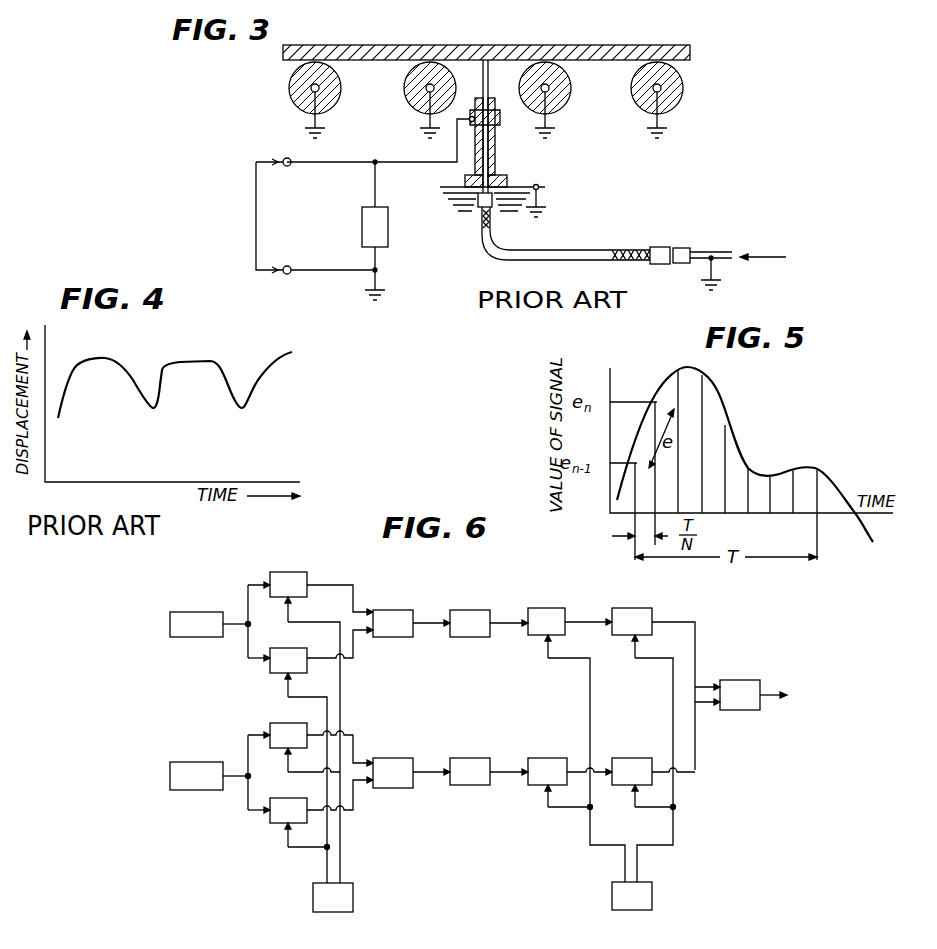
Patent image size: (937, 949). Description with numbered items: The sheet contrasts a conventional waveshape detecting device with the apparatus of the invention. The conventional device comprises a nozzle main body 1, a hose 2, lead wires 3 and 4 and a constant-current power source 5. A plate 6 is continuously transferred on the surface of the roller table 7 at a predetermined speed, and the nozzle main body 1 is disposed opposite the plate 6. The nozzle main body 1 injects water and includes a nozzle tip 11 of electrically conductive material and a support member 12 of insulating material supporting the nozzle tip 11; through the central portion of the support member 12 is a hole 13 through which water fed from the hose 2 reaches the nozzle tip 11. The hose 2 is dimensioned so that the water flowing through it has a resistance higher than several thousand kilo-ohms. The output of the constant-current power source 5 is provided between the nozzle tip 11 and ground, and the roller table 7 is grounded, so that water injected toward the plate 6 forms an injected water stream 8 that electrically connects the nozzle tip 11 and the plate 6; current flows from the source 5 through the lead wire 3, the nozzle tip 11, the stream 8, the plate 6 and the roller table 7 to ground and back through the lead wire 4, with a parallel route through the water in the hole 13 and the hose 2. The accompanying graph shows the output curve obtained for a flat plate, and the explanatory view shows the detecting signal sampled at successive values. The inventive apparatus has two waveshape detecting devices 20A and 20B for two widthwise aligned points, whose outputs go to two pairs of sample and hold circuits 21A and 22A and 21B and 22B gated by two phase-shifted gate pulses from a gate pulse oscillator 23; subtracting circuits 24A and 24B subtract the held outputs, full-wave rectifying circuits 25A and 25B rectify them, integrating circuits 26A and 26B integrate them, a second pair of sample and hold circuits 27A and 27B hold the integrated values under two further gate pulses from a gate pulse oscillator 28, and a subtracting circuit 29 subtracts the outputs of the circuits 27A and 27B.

In FIG. 3, the nozzle main body 1 is at (533, 153).
In FIG. 3, the hose 2 is at (580, 252).
In FIG. 3, the lead wire 3 is at (409, 161).
In FIG. 3, the lead wire 4 is at (378, 257).
In FIG. 3, the constant-current power source 5 is at (389, 233).
In FIG. 3, the plate 6 is at (575, 47).
In FIG. 3, the roller table 7 is at (570, 96).
In FIG. 3, the injected water stream 8 is at (488, 73).
In FIG. 3, the nozzle tip 11 is at (477, 101).
In FIG. 3, the support member 12 is at (496, 131).
In FIG. 3, the hole 13 is at (496, 160).
In FIG. 6, the waveshape detecting device 20A is at (200, 601).
In FIG. 6, the waveshape detecting device 20B is at (190, 762).
In FIG. 6, the sample and hold circuit 21A is at (288, 573).
In FIG. 6, the sample and hold circuit 21B is at (272, 723).
In FIG. 6, the sample and hold circuit 22A is at (270, 672).
In FIG. 6, the sample and hold circuit 22B is at (272, 824).
In FIG. 6, the gate pulse oscillator 23 is at (353, 895).
In FIG. 6, the subtracting circuit 24A is at (384, 610).
In FIG. 6, the subtracting circuit 24B is at (389, 753).
In FIG. 6, the full-wave rectifying circuit 25A is at (468, 602).
In FIG. 6, the full-wave rectifying circuit 25B is at (468, 751).
In FIG. 6, the integrating circuit 26A is at (546, 602).
In FIG. 6, the integrating circuit 26B is at (546, 751).
In FIG. 6, the sample and hold circuit 27A is at (630, 602).
In FIG. 6, the sample and hold circuit 27B is at (630, 751).
In FIG. 6, the gate pulse oscillator 28 is at (652, 895).
In FIG. 6, the subtracting circuit 29 is at (745, 680).